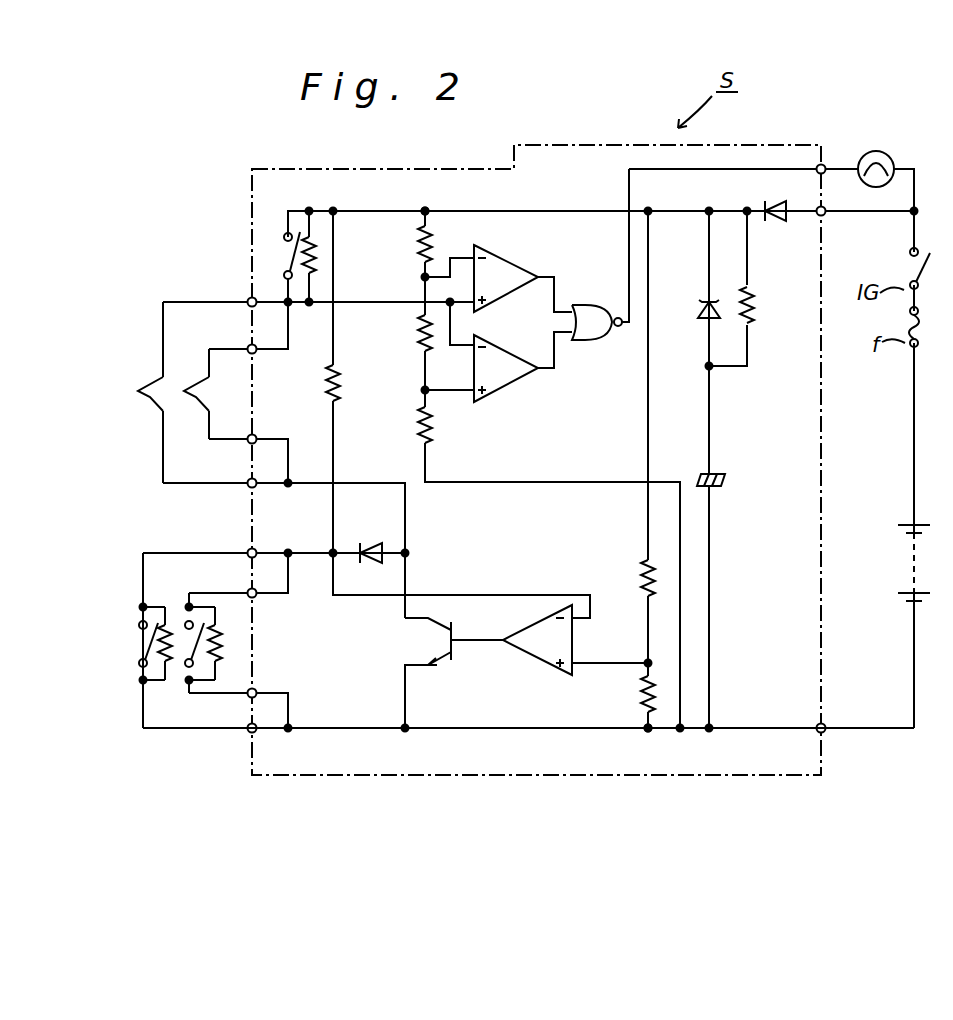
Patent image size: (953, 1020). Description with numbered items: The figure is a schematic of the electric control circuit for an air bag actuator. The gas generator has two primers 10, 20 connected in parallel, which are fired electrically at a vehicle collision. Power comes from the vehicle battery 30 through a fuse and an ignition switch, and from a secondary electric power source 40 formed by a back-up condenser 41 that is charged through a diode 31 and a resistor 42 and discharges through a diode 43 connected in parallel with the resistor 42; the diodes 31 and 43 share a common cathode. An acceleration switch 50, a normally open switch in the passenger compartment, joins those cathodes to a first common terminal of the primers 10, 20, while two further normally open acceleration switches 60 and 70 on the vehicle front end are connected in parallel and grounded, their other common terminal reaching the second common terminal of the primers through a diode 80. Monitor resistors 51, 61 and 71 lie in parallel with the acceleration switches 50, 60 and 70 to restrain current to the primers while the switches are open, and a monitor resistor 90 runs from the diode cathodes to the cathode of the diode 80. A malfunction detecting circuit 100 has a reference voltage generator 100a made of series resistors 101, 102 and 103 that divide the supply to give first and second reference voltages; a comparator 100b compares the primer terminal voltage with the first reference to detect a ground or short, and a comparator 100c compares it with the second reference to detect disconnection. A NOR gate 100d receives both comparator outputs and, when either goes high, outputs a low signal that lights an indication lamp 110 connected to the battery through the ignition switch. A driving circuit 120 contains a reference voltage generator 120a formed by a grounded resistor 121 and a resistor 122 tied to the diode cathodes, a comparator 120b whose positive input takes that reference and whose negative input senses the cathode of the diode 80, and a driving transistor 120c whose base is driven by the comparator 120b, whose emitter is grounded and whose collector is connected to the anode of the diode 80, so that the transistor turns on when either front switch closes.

The primer 10 is at (146, 408).
The primer 20 is at (200, 405).
The vehicle battery 30 is at (906, 564).
The diode 31 is at (778, 202).
The secondary electric power source 40 is at (726, 469).
The back-up condenser 41 is at (718, 475).
The resistor 42 is at (756, 298).
The diode 43 is at (700, 312).
The acceleration switch 50 is at (286, 262).
The monitor resistor 51 is at (318, 258).
The acceleration switch 60 is at (137, 640).
The monitor resistor 61 is at (168, 620).
The acceleration switch 70 is at (184, 676).
The monitor resistor 71 is at (225, 648).
The diode 80 is at (366, 545).
The monitor resistor 90 is at (344, 386).
The malfunction detecting circuit 100 is at (545, 191).
The reference voltage generator 100a is at (431, 202).
The comparator 100b is at (502, 392).
The comparator 100c is at (490, 262).
The NOR gate 100d is at (588, 306).
The resistor 101 is at (420, 432).
The resistor 102 is at (420, 340).
The resistor 103 is at (420, 255).
The indication lamp 110 is at (875, 162).
The driving circuit 120 is at (472, 745).
The reference voltage generator 120a is at (650, 735).
The comparator 120b is at (524, 634).
The driving transistor 120c is at (440, 648).
The resistor 121 is at (640, 694).
The resistor 122 is at (640, 578).